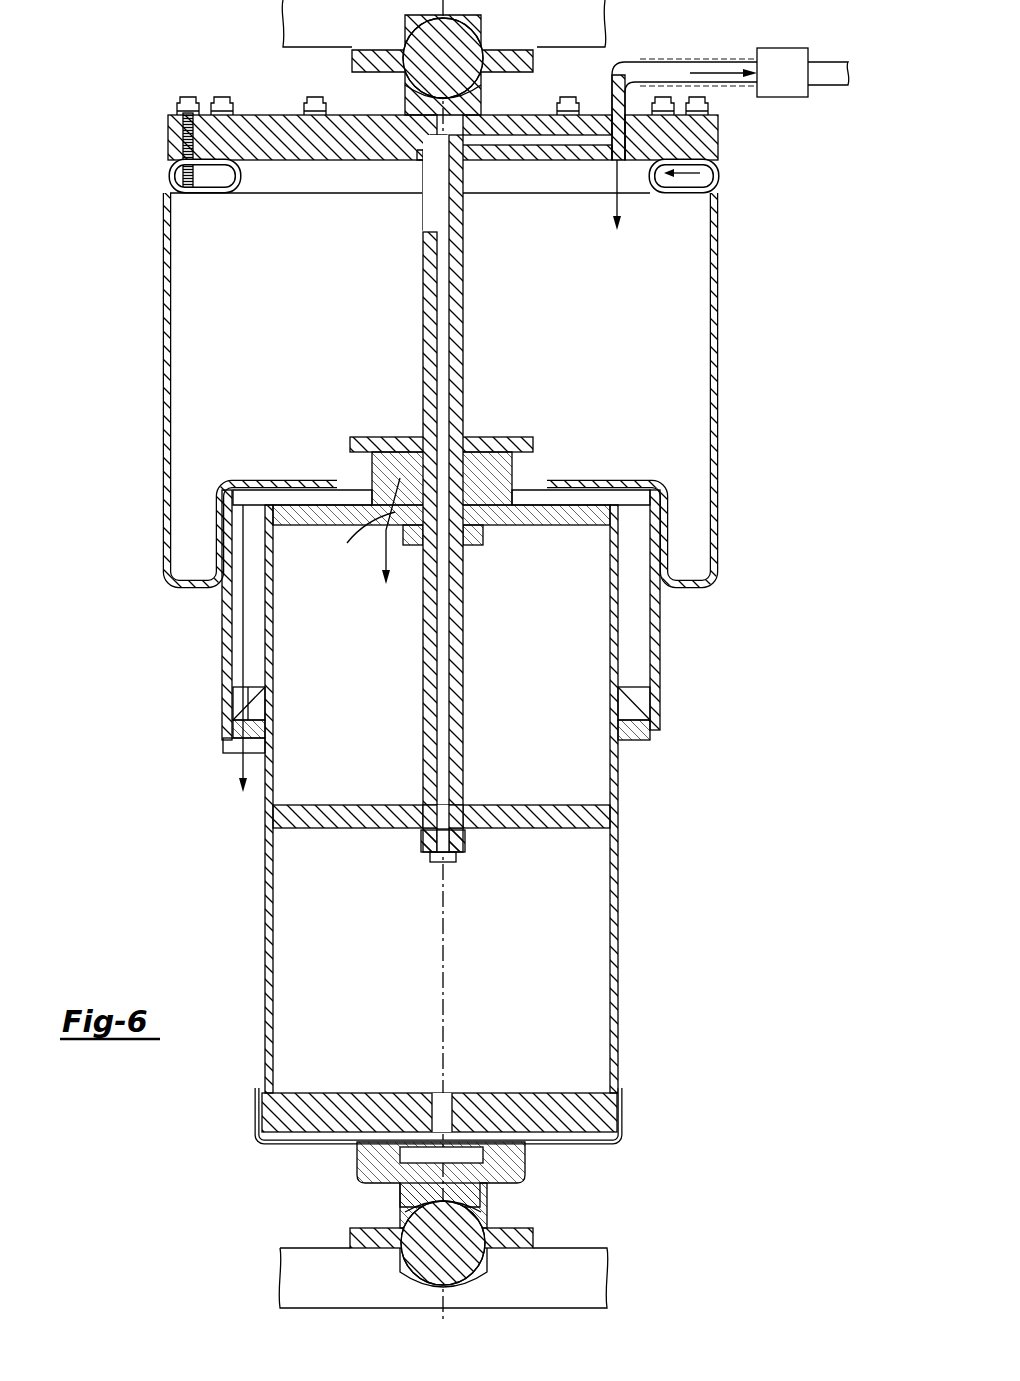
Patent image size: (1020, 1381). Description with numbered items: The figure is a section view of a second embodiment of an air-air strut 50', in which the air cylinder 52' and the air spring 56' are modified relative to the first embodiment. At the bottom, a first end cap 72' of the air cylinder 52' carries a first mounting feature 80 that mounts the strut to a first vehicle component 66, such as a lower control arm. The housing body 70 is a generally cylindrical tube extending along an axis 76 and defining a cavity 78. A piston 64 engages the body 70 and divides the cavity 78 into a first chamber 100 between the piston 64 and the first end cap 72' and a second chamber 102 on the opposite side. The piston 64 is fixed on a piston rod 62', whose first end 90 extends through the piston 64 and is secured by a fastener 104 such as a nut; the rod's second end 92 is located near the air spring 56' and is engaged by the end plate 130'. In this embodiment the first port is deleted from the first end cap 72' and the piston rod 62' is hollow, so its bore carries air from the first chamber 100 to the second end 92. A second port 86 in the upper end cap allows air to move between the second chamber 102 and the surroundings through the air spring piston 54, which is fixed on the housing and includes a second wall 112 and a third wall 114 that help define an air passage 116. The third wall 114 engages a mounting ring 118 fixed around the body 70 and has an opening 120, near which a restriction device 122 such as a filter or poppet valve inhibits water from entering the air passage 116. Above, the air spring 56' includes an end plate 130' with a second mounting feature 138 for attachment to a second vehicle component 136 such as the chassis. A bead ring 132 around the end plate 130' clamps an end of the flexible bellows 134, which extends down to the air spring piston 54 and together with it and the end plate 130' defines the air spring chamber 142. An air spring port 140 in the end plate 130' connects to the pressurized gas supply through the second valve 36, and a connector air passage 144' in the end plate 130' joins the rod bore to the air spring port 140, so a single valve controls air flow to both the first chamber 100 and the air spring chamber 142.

The air-air strut 50' is at (398, 655).
The end plate 130' is at (443, 109).
The second vehicle component 136 is at (339, 29).
The second mounting feature 138 is at (350, 62).
The air spring port 140 is at (615, 63).
The second valve 36 is at (795, 82).
The second end 92 is at (422, 160).
The air spring 56' is at (266, 184).
The bead ring 132 is at (718, 173).
The flexible bellows 134 is at (718, 232).
The air spring chamber 142 is at (331, 294).
The connector air passage 144' is at (521, 197).
The axis 76 is at (463, 397).
The second port 86 is at (375, 465).
The air spring piston 54 is at (218, 610).
The air passage 116 is at (255, 668).
The second chamber 102 is at (405, 661).
The third wall 114 is at (640, 687).
The second wall 112 is at (662, 650).
The piston rod 62' is at (473, 700).
The opening 120 is at (235, 703).
The mounting ring 118 is at (652, 737).
The restriction device 122 is at (223, 745).
The fastener 104 is at (421, 838).
The piston 64 is at (572, 830).
The first end 90 is at (438, 862).
The body 70 is at (265, 915).
The air cylinder 52' is at (489, 972).
The first chamber 100 is at (378, 981).
The cavity 78 is at (597, 1060).
The first end cap 72' is at (480, 1174).
The first mounting feature 80 is at (535, 1240).
The first vehicle component 66 is at (346, 1291).